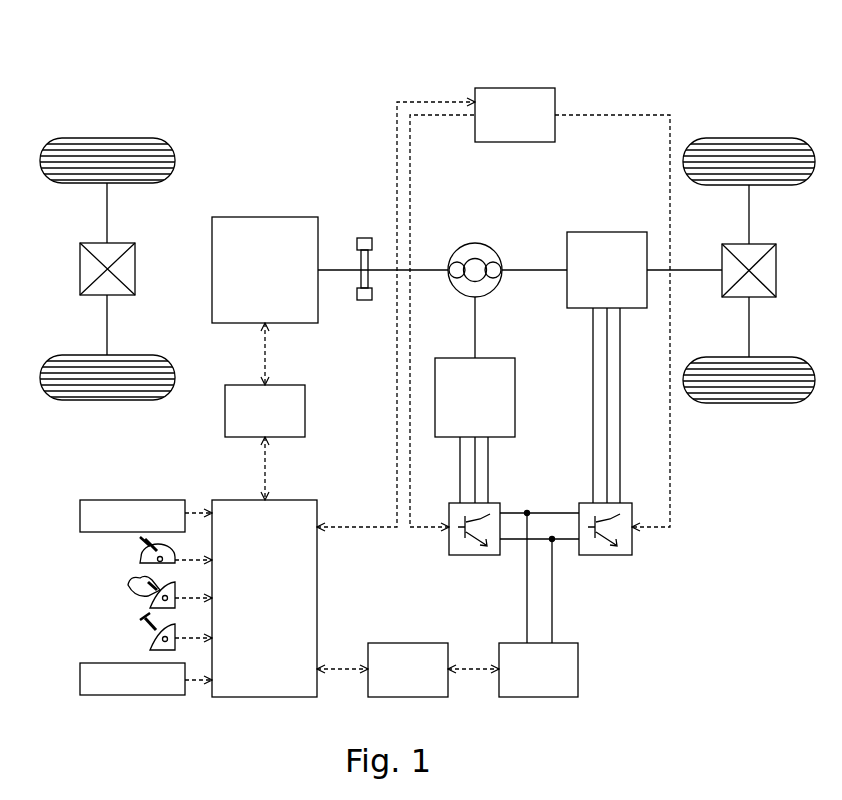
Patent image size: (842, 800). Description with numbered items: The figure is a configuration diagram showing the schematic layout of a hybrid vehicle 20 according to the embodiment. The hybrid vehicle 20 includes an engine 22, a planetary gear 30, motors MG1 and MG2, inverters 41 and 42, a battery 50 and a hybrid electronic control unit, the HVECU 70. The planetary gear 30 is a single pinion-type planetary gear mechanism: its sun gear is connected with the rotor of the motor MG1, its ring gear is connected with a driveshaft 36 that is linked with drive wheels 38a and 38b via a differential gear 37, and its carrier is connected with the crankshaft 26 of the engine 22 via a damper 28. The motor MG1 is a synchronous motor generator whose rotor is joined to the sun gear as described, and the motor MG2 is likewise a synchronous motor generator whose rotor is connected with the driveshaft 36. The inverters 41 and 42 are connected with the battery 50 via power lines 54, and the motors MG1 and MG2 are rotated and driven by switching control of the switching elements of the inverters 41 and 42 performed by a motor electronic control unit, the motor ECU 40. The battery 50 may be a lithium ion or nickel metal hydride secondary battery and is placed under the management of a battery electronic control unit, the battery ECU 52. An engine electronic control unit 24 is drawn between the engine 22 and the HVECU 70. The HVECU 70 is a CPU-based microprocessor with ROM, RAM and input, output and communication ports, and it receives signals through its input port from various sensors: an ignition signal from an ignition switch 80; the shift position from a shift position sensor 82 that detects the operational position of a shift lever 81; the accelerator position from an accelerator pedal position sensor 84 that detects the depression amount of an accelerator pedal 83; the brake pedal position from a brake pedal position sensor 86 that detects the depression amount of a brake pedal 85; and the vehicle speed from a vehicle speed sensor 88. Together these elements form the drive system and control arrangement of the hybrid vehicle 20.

The hybrid vehicle 20 is at (646, 60).
The engine 22 is at (290, 217).
The engine ECU 24 is at (290, 385).
The crankshaft 26 is at (331, 268).
The damper 28 is at (363, 238).
The planetary gear 30 is at (474, 243).
The motor MG1 is at (500, 358).
The motor MG2 is at (618, 232).
The driveshaft 36 is at (693, 270).
The differential gear 37 is at (756, 244).
The drive wheel 38a is at (748, 138).
The drive wheel 38b is at (748, 403).
The motor electronic control unit 40 is at (528, 88).
The inverter 41 is at (497, 503).
The inverter 42 is at (628, 503).
The battery 50 is at (578, 669).
The battery electronic control unit 52 is at (394, 643).
The power lines 54 is at (545, 538).
The hybrid electronic control unit 70 is at (290, 500).
The ignition switch 80 is at (80, 514).
The shift lever 81 is at (140, 546).
The shift position sensor 82 is at (142, 560).
The accelerator pedal 83 is at (140, 588).
The accelerator pedal position sensor 84 is at (150, 600).
The brake pedal 85 is at (142, 630).
The brake pedal position sensor 86 is at (150, 640).
The vehicle speed sensor 88 is at (80, 680).